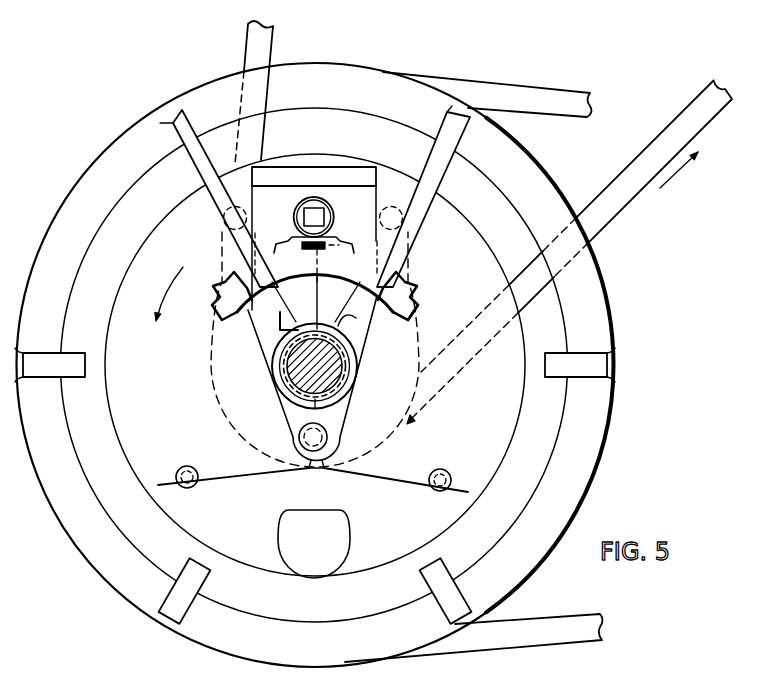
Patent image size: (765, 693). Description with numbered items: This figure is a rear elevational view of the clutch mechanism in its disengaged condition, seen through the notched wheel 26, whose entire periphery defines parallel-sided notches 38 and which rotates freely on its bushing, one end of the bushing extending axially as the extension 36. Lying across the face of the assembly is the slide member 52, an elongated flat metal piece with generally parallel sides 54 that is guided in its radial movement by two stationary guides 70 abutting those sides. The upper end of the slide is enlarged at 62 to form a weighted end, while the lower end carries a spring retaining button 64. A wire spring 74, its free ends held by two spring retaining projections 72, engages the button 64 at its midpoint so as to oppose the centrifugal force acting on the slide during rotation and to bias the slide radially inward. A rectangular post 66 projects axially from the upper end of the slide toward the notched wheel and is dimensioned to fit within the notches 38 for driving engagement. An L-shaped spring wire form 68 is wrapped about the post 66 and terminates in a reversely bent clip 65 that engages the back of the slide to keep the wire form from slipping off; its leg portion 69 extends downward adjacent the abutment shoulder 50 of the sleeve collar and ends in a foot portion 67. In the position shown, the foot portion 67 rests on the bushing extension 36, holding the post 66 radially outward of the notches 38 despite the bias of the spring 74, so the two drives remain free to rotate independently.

The notched wheel 26 is at (414, 300).
The bushing extension 36 is at (280, 370).
The notches 38 is at (403, 273).
The abutment shoulder 50 is at (333, 312).
The slide member 52 is at (264, 348).
The parallel sides 54 is at (226, 193).
The enlarged upper portion 62 is at (336, 166).
The spring retaining button 64 is at (327, 437).
The reversely bent clip 65 is at (295, 241).
The rectangular post 66 is at (328, 220).
The foot portion 67 is at (290, 330).
The spring wire form 68 is at (320, 304).
The leg portion 69 is at (316, 306).
The stationary guides 70 is at (224, 220).
The spring retaining projections 72 is at (196, 468).
The wire spring 74 is at (393, 480).